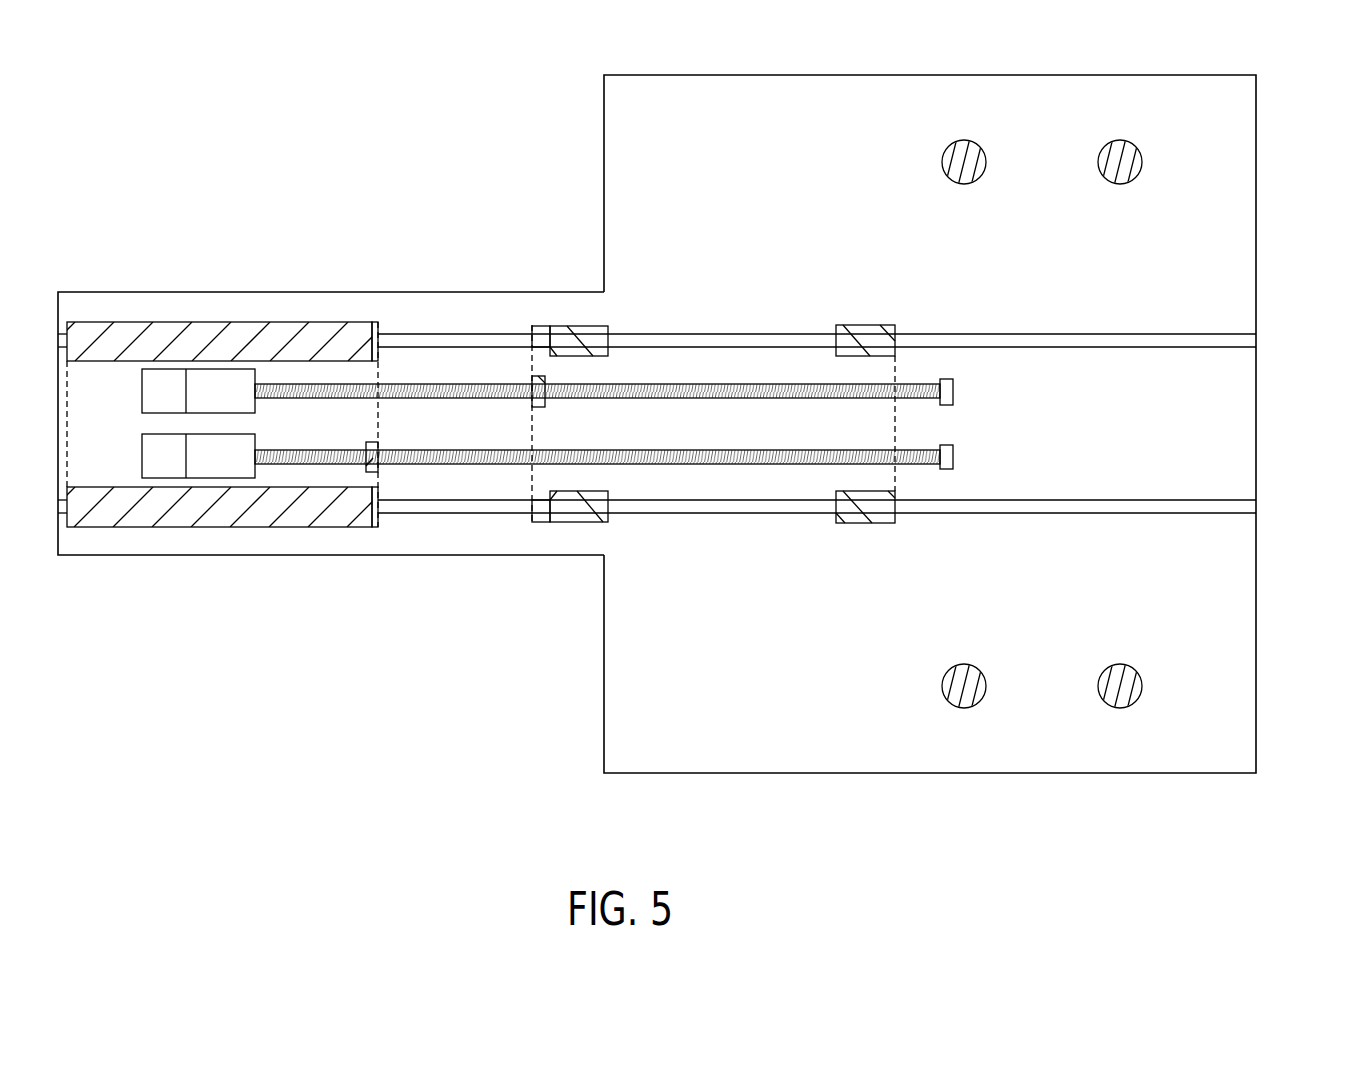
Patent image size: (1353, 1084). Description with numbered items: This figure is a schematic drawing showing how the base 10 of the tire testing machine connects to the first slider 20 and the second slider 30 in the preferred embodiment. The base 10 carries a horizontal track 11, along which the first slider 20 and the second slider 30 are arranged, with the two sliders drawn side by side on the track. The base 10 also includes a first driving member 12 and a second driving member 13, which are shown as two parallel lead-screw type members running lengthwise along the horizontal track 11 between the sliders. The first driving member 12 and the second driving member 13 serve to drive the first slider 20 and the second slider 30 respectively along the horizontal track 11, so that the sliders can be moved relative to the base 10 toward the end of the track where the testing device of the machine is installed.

The base 10 is at (568, 103).
The horizontal track 11 is at (1157, 412).
The first driving member 12 is at (428, 385).
The second driving member 13 is at (428, 455).
The first slider 20 is at (562, 533).
The second slider 30 is at (195, 533).